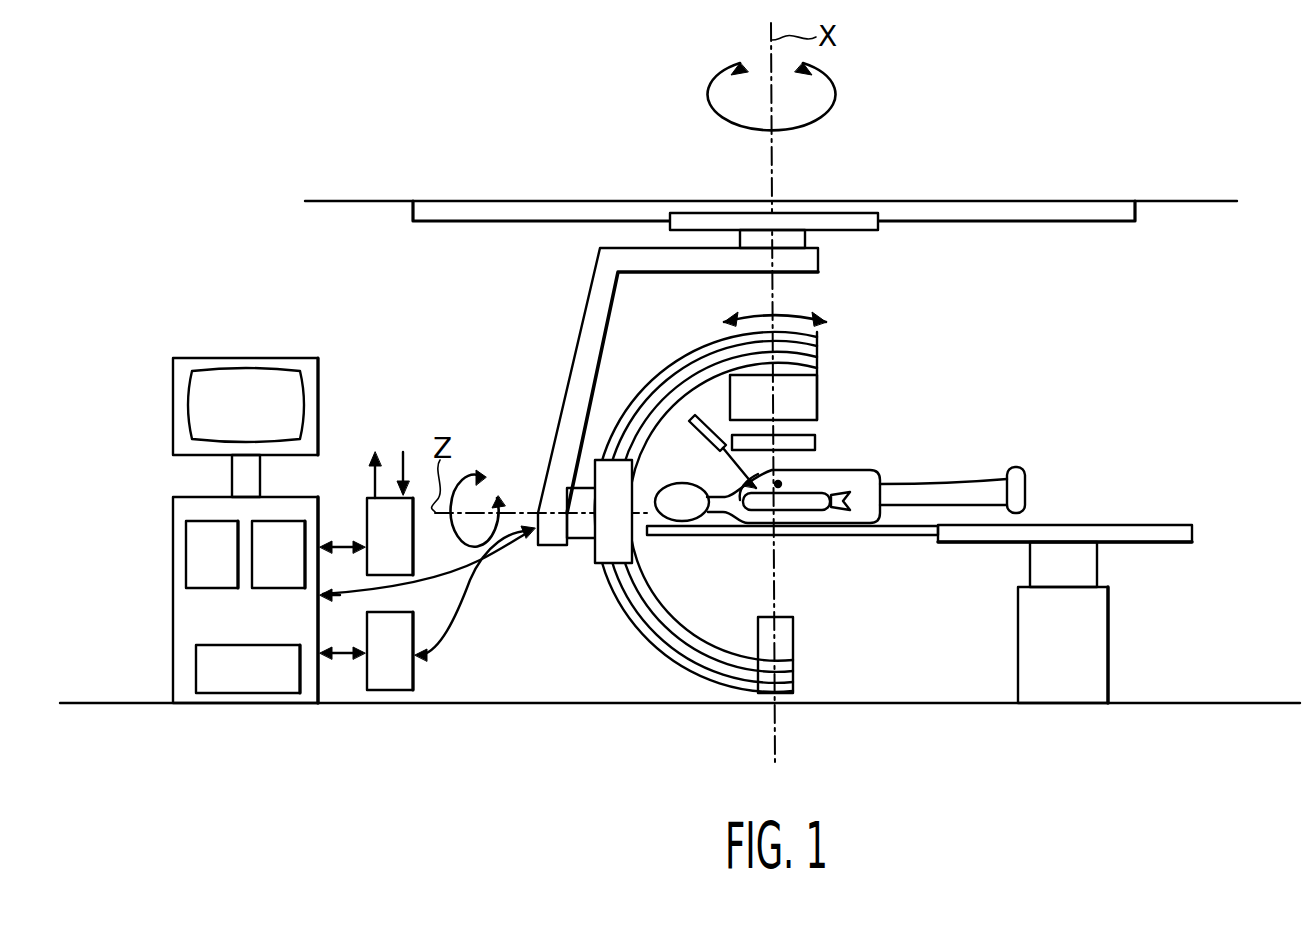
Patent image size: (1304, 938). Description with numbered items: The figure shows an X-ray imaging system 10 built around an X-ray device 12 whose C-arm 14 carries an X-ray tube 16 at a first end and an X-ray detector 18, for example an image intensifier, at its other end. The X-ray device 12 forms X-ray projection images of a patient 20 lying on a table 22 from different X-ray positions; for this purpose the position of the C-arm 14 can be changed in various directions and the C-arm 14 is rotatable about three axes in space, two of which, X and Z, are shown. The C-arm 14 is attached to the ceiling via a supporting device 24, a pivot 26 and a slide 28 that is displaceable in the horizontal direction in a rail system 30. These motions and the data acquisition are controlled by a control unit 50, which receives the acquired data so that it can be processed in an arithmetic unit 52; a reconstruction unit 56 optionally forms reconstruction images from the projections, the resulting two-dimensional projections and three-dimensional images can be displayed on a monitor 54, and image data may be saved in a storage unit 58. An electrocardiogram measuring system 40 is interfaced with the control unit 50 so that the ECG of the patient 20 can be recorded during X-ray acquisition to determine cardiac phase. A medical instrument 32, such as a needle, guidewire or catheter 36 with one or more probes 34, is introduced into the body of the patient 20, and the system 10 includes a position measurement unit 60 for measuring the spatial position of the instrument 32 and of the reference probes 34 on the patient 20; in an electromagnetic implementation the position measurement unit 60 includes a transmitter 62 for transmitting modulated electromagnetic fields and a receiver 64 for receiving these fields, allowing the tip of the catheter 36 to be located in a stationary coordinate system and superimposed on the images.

The system 10 is at (919, 616).
The X-ray device 12 is at (518, 661).
The C-arm 14 is at (640, 632).
The X-ray tube 16 is at (793, 641).
The X-ray detector 18 is at (818, 385).
The patient 20 is at (840, 513).
The table 22 is at (1168, 525).
The supporting device 24 is at (573, 352).
The pivot 26 is at (807, 238).
The slide 28 is at (862, 206).
The rail system 30 is at (1053, 222).
The instrument 32 is at (706, 420).
The probe 34 is at (720, 534).
The catheter 36 is at (740, 500).
The ECG measuring system 40 is at (403, 661).
The control unit 50 is at (203, 600).
The arithmetic unit 52 is at (292, 566).
The monitor 54 is at (173, 432).
The reconstruction unit 56 is at (226, 566).
The storage unit 58 is at (262, 687).
The position measurement unit 60 is at (403, 549).
The transmitter 62 is at (758, 473).
The receiver 64 is at (815, 443).